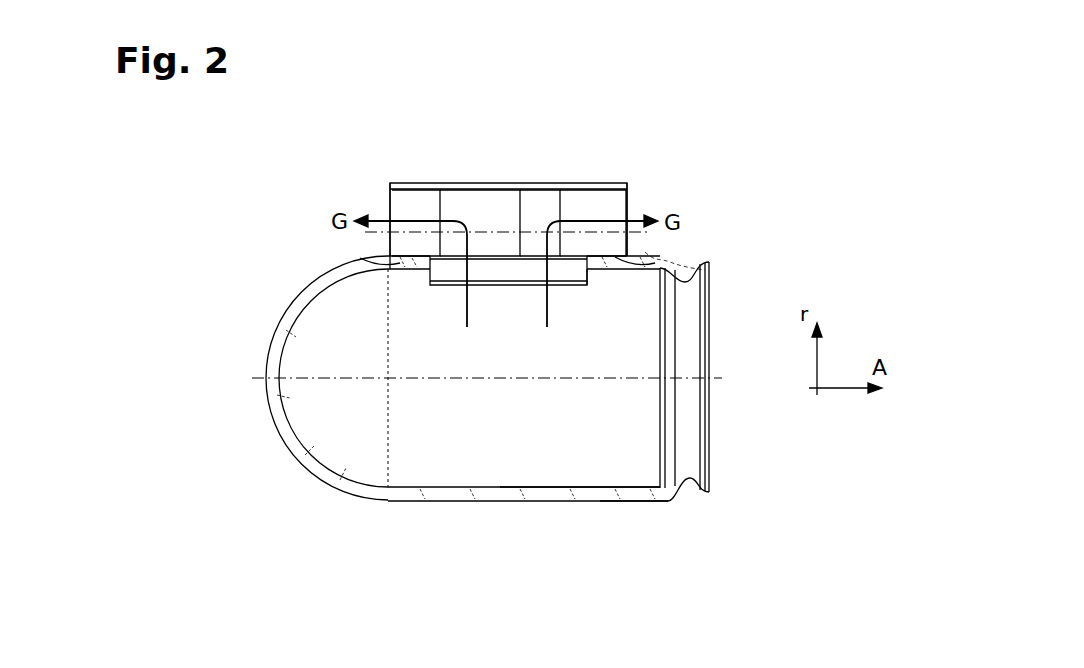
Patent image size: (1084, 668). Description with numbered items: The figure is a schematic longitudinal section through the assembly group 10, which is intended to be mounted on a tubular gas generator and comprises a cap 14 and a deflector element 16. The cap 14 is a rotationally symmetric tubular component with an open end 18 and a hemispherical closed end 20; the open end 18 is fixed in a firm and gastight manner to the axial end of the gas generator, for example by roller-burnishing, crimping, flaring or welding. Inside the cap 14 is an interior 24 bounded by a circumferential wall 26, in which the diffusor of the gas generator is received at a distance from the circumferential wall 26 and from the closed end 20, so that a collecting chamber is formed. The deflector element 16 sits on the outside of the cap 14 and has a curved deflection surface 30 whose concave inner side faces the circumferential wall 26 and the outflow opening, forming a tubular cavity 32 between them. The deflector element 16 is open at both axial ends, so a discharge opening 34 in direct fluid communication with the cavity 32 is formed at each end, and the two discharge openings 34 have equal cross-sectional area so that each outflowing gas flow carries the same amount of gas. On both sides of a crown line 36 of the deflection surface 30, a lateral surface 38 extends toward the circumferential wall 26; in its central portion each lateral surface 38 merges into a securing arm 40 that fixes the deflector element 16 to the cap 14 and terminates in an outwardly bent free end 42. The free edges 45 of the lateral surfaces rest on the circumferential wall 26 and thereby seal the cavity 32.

The assembly group 10 is at (238, 228).
The cap 14 is at (440, 509).
The deflector element 16 is at (648, 160).
The open end 18 is at (727, 450).
The closed end 20 is at (288, 440).
The interior 24 is at (630, 476).
The circumferential wall 26 is at (543, 496).
The deflection surface 30 is at (570, 200).
The cavity 32 is at (430, 200).
The discharge opening 34 is at (390, 193).
The crown line 36 is at (545, 191).
The lateral surface 38 is at (504, 210).
The securing arm 40 is at (573, 268).
The bent free end 42 is at (587, 284).
The free edge 45 is at (355, 258).